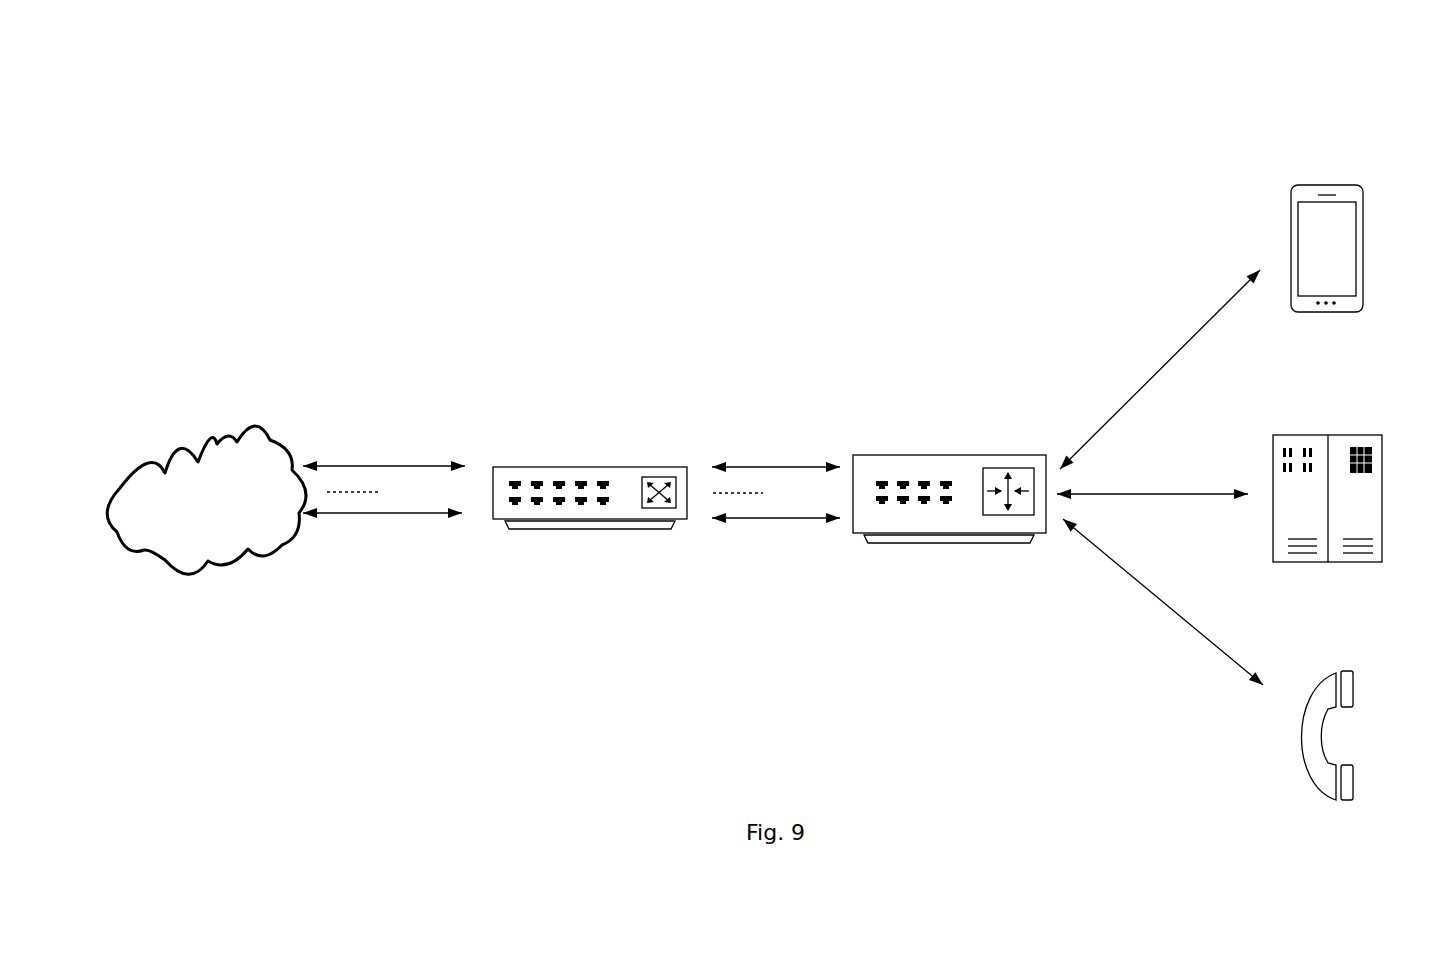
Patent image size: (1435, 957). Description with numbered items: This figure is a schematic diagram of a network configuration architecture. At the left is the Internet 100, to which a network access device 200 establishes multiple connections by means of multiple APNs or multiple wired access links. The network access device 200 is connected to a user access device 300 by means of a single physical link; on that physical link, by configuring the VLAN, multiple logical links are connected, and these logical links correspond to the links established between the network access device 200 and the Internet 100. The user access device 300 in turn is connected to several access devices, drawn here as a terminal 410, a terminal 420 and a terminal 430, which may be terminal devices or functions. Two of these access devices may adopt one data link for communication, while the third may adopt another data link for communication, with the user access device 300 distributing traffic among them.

The Internet 100 is at (273, 468).
The network access device 200 is at (628, 477).
The user access device 300 is at (955, 467).
The smartphone terminal 410 is at (1345, 195).
The server terminal 420 is at (1352, 440).
The telephone terminal 430 is at (1353, 683).